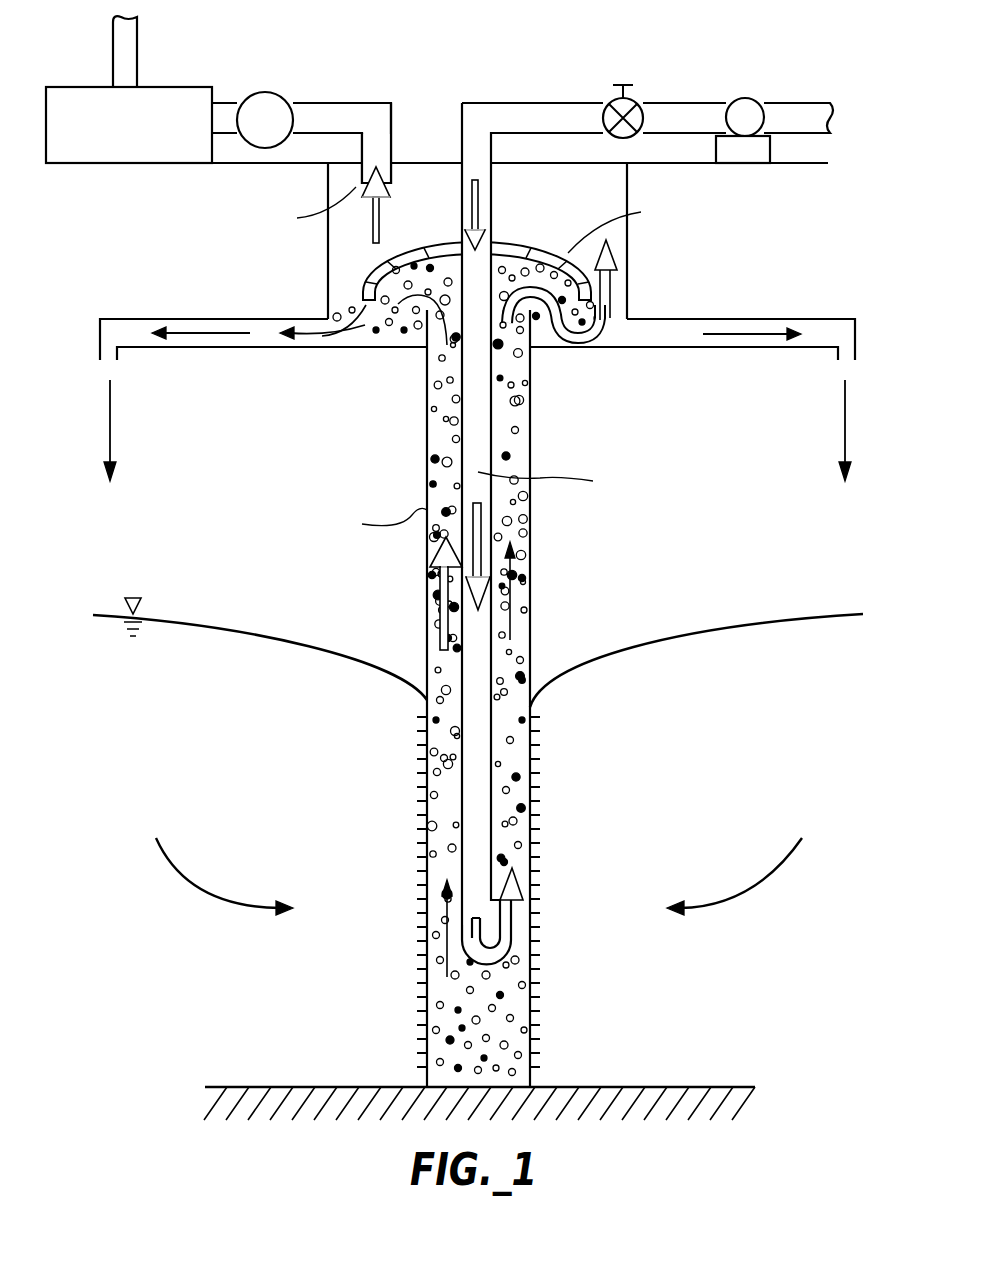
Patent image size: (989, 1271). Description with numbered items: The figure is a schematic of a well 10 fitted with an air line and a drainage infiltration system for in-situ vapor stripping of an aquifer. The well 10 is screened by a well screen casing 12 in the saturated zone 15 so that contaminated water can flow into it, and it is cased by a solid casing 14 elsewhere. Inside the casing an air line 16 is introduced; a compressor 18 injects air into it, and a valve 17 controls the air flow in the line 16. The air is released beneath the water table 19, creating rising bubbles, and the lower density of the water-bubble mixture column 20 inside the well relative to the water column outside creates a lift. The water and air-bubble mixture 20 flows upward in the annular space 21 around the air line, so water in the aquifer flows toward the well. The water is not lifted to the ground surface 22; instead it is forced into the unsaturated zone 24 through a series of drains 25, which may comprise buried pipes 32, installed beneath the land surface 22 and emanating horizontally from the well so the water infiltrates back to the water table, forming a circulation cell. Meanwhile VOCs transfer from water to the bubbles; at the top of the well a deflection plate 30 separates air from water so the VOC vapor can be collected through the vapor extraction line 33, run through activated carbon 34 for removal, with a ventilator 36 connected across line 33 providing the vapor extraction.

The well 10 is at (788, 867).
The well screen casing 12 is at (532, 1007).
The solid casing 14 is at (530, 535).
The saturated zone 15 is at (247, 735).
The air line 16 is at (503, 108).
The valve 17 is at (630, 95).
The compressor 18 is at (775, 42).
The water table 19 is at (835, 614).
The water-bubble mixture column 20 is at (513, 987).
The annular space 21 is at (519, 449).
The ground surface 22 is at (816, 163).
The unsaturated zone 24 is at (690, 392).
The drains 25 is at (706, 312).
The deflection plate 30 is at (532, 248).
The buried pipes 32 is at (822, 319).
The vapor extraction line 33 is at (358, 103).
The activated carbon 34 is at (170, 87).
The ventilator 36 is at (330, 50).